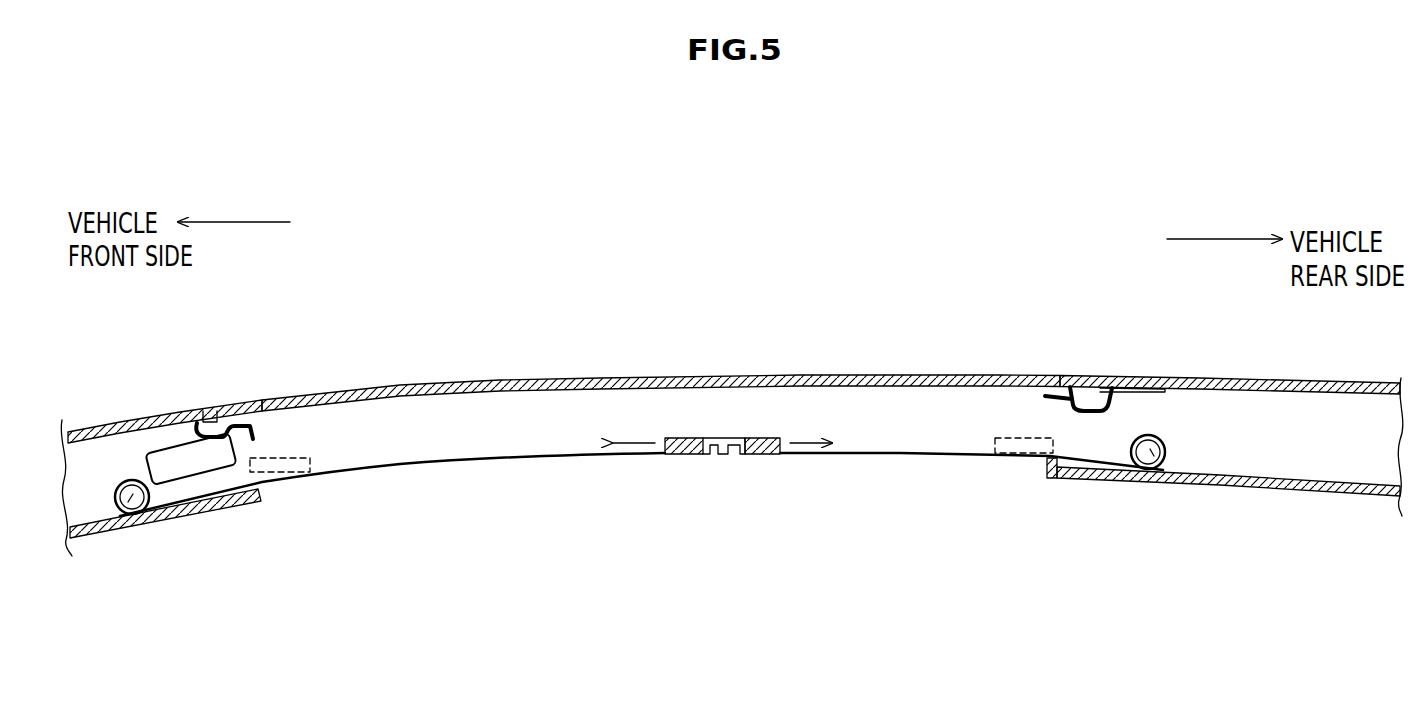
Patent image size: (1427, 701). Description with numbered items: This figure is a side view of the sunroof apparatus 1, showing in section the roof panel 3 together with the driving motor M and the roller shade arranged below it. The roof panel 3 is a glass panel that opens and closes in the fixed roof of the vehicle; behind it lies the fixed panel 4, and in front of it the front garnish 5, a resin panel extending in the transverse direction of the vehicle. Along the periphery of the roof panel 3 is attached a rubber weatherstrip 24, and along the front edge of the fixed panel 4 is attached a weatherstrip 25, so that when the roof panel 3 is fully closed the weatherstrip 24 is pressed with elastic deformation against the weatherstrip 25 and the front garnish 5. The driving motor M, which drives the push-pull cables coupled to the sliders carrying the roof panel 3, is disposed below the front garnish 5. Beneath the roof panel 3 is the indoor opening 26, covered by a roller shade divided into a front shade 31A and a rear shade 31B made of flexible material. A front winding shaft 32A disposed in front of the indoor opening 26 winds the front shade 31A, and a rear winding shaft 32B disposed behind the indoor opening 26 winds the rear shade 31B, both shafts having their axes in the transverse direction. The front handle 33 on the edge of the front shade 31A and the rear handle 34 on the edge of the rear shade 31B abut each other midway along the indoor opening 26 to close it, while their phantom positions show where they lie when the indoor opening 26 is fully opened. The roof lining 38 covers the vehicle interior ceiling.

The sunroof apparatus 1 is at (315, 537).
The roof panel 3 is at (550, 382).
The fixed panel 4 is at (1272, 381).
The front garnish 5 is at (143, 420).
The weatherstrip 24 is at (1083, 376).
The weatherstrip 25 is at (1097, 376).
The indoor opening 26 is at (1047, 477).
The front shade 31A is at (385, 465).
The rear shade 31B is at (870, 455).
The front winding shaft 32A is at (133, 514).
The rear winding shaft 32B is at (1157, 470).
The front handle 33 is at (705, 455).
The rear handle 34 is at (740, 455).
The roof lining 38 is at (103, 540).
The driving motor M is at (200, 468).